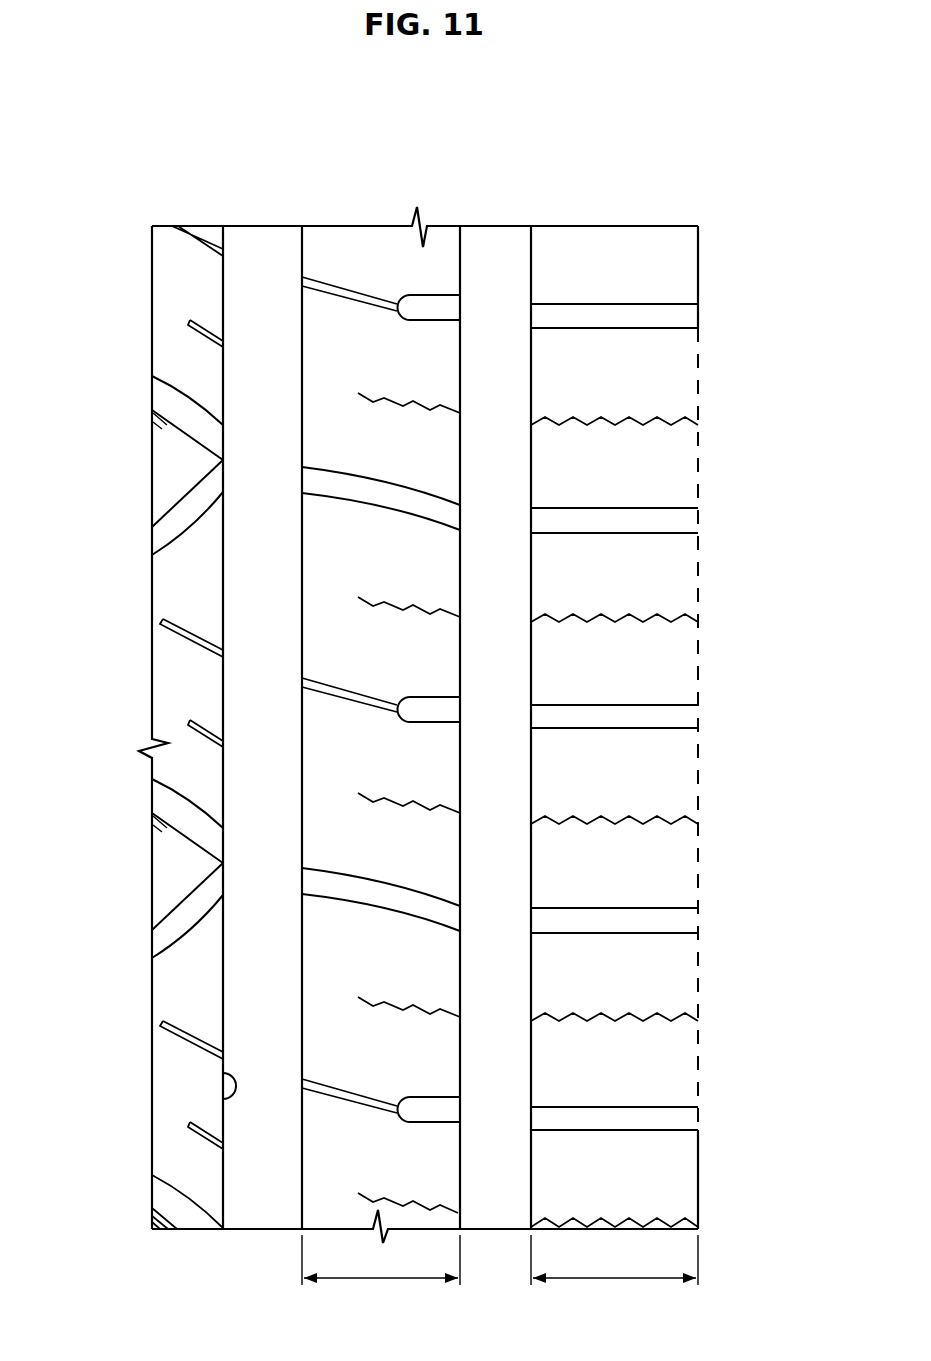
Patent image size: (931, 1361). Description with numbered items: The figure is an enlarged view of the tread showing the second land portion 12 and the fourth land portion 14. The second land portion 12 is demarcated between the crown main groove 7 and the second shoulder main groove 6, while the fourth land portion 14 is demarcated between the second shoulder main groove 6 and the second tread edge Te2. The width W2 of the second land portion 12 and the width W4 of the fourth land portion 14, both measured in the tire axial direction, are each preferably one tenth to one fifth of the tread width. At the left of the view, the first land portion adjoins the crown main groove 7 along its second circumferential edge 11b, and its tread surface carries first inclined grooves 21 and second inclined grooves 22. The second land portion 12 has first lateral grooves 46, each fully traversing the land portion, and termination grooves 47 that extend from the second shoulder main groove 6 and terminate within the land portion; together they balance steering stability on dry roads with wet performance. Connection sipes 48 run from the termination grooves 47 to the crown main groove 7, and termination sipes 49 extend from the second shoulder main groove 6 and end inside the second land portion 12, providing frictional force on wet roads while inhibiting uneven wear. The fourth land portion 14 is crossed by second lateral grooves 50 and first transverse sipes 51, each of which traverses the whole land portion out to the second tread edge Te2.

The second shoulder main groove 6 is at (492, 268).
The crown main groove 7 is at (264, 273).
The second land portion 12 is at (378, 263).
The fourth land portion 14 is at (594, 266).
The first inclined groove 21 is at (184, 513).
The second inclined groove 22 is at (193, 422).
The first lateral groove 46 is at (380, 503).
The termination groove 47 is at (430, 712).
The connection sipe 48 is at (352, 296).
The termination sipe 49 is at (405, 403).
The second lateral groove 50 is at (643, 318).
The first transverse sipe 51 is at (641, 420).
The second circumferential edge 11b is at (223, 1100).
The second tread edge Te2 is at (700, 252).
The width of the second land portion W2 is at (381, 1274).
The width of the fourth land portion W4 is at (614, 1274).